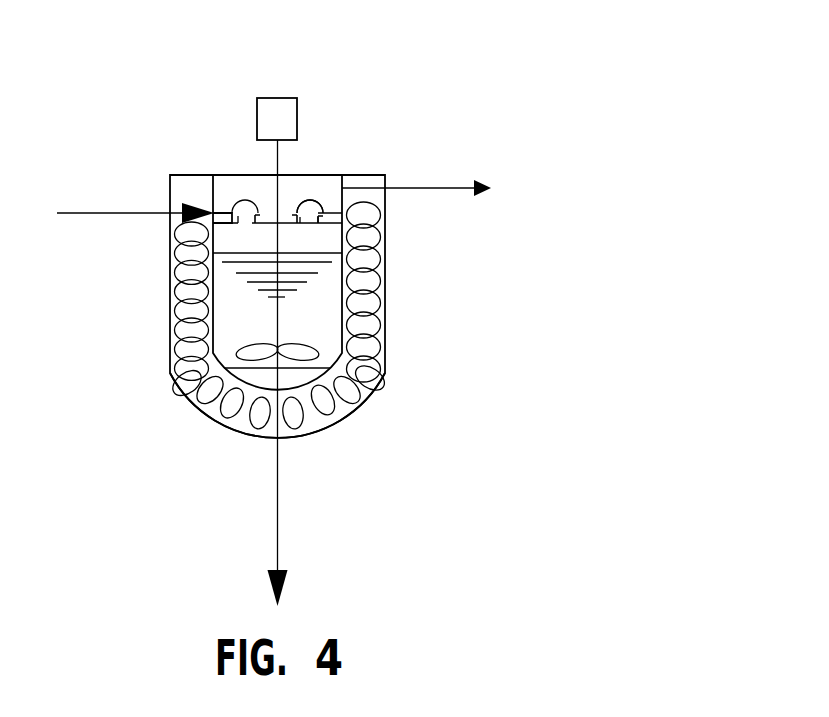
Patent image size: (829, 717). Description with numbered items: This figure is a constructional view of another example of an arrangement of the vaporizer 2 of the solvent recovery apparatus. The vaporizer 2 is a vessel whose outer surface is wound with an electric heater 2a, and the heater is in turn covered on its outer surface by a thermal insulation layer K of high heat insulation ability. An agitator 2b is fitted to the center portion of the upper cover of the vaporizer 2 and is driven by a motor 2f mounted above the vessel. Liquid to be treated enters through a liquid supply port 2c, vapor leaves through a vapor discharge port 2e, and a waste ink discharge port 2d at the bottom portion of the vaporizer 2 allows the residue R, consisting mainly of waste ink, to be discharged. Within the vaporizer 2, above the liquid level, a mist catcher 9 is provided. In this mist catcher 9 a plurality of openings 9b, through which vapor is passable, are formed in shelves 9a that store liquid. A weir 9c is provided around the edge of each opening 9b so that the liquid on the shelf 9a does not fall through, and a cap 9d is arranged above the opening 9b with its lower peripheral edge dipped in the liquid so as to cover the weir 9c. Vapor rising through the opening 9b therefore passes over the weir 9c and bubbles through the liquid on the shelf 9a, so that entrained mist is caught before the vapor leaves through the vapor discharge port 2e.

The vaporizer 2 is at (135, 258).
The electric heater 2a is at (184, 392).
The agitator 2b is at (322, 353).
The liquid supply port 2c is at (213, 208).
The waste ink discharge port 2d is at (299, 410).
The vapor discharge port 2e is at (345, 190).
The motor 2f is at (272, 98).
The mist catcher 9 is at (252, 185).
The shelf 9a is at (343, 218).
The opening 9b is at (311, 225).
The weir 9c is at (314, 205).
The cap 9d is at (313, 215).
The thermal insulation layer K is at (384, 323).
The residue R is at (297, 375).